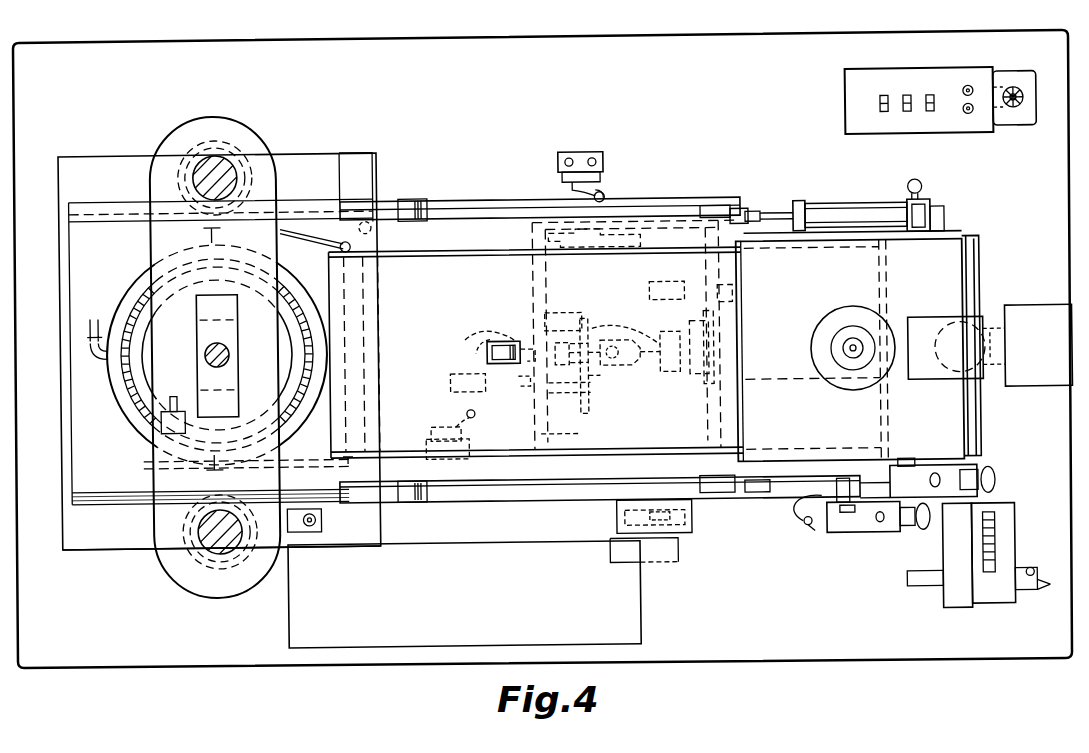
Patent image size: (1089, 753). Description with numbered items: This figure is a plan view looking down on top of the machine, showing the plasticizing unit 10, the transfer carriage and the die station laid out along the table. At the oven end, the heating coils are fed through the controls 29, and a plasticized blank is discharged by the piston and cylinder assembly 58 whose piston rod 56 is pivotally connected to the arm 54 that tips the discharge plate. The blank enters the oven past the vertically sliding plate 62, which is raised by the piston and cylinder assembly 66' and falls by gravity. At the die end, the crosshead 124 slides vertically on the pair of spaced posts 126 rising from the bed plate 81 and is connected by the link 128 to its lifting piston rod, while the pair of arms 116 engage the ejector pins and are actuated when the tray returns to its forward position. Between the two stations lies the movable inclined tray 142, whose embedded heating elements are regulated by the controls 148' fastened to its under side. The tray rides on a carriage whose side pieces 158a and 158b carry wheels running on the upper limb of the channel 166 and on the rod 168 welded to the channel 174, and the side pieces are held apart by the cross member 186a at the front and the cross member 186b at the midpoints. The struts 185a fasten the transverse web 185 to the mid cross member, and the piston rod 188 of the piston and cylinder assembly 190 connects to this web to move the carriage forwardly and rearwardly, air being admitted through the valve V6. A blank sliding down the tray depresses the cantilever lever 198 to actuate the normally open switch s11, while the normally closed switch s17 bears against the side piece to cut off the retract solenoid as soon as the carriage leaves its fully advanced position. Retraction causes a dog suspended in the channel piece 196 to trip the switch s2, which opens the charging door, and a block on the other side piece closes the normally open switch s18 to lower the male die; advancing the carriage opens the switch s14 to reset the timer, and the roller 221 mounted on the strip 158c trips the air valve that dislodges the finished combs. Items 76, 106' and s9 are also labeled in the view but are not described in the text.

The plasticizing unit 10 is at (988, 229).
The controls 29 is at (982, 470).
The arm 54 is at (738, 206).
The piston rod 56 is at (774, 210).
The piston and cylinder assembly 58 is at (860, 190).
The vertically sliding plate 62 is at (976, 282).
The piston and cylinder assembly 66' is at (964, 369).
The gear ring 76 is at (130, 416).
The bed plate 81 is at (72, 552).
The turntable 106' is at (204, 349).
The arms 116 is at (305, 230).
The crosshead 124 is at (150, 178).
The posts 126 is at (208, 165).
The link 128 is at (215, 352).
The tray 142 is at (468, 238).
The controls 148' is at (861, 526).
The side piece 158a is at (480, 188).
The side piece 158b is at (500, 495).
The strip 158c is at (676, 188).
The channel 166 is at (80, 210).
The rod 168 is at (125, 495).
The channel 174 is at (125, 505).
The web 185 is at (590, 392).
The struts 185a is at (562, 318).
The cross member 186a is at (738, 272).
The cross member 186b is at (560, 433).
The piston rod 188 is at (606, 340).
The piston and cylinder assembly 190 is at (770, 385).
The channel piece 196 is at (488, 354).
The cantilever lever 198 is at (470, 338).
The roller 221 is at (545, 276).
The valve V6 is at (1038, 345).
The switch s2 is at (662, 284).
The switch s9 is at (470, 424).
The normally open switch s11 is at (499, 334).
The switch s14 is at (450, 383).
The normally closed switch s17 is at (606, 190).
The normally open switch s18 is at (655, 560).